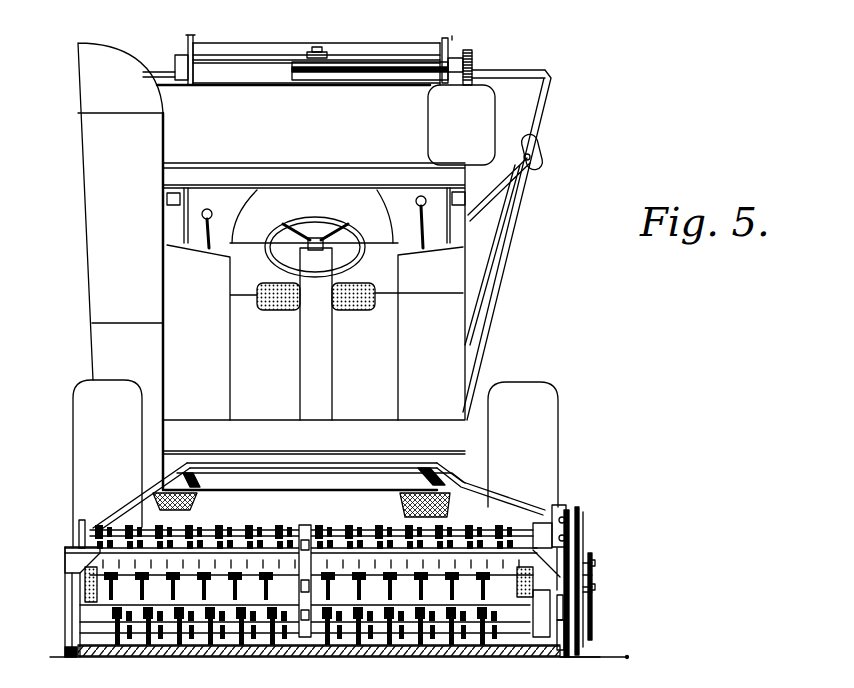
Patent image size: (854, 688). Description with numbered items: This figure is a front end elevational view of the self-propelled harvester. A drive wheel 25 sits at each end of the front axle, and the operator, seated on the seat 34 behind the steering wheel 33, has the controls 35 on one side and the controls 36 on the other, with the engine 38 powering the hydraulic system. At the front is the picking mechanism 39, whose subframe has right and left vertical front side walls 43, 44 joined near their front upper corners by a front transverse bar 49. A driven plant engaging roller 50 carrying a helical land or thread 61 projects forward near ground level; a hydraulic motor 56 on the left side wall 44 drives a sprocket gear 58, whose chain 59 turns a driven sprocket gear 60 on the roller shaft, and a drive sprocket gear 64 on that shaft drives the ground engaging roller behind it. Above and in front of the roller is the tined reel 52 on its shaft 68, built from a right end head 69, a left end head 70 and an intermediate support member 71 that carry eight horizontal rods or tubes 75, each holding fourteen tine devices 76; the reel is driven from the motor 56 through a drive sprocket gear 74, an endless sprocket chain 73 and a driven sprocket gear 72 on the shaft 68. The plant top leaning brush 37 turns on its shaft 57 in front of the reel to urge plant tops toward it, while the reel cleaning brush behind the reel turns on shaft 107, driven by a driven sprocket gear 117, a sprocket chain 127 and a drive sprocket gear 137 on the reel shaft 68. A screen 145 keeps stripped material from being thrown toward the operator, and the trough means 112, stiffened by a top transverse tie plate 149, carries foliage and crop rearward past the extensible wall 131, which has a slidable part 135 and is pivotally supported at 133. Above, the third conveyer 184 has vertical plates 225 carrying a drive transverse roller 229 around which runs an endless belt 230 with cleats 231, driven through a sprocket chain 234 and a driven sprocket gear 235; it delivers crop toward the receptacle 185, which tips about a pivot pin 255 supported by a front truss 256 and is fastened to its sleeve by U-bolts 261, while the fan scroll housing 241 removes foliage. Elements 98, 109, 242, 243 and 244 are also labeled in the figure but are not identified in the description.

The drive wheel 25 is at (73, 396).
The steering wheel 33 is at (300, 217).
The seat 34 is at (284, 313).
The controls 35 is at (421, 196).
The controls 36 is at (208, 208).
The plant top leaning means 37 is at (80, 597).
The engine 38 is at (128, 296).
The picking mechanism 39 is at (147, 518).
The right front side wall 43 is at (67, 638).
The left front side wall 44 is at (562, 640).
The front transverse bar 49 is at (98, 550).
The plant engaging roller 50 is at (528, 655).
The tined reel 52 is at (474, 522).
The hydraulic motor 56 is at (542, 523).
The brush shaft 57 is at (593, 587).
The sprocket gear 58 is at (567, 510).
The chain 59 is at (572, 624).
The driven sprocket gear 60 is at (575, 657).
The helical land or thread 61 is at (333, 655).
The drive sprocket gear 64 is at (566, 660).
The reel shaft 68 is at (592, 575).
The right end head 69 is at (78, 525).
The left end head 70 is at (560, 507).
The intermediate support member 71 is at (303, 525).
The driven sprocket gear 72 is at (586, 592).
The endless sprocket chain 73 is at (584, 527).
The drive sprocket gear 74 is at (577, 508).
The rods or tubes 75 is at (380, 530).
The tine devices 76 is at (262, 524).
The shaft 98 is at (590, 543).
The cleaning brush shaft 107 is at (592, 563).
The sickle guards 109 is at (155, 658).
The trough means 112 is at (152, 485).
The driven sprocket gear 117 is at (591, 553).
The sprocket chain 127 is at (595, 566).
The extensible and contractible wall 131 is at (205, 500).
The pivotal support 133 is at (207, 470).
The wall part 135 is at (178, 477).
The drive sprocket gear 137 is at (593, 590).
The screen 145 is at (260, 505).
The top transverse tie plate 149 is at (372, 467).
The third conveyer 184 is at (453, 37).
The receptacle 185 is at (540, 101).
The vertical plates 225 is at (185, 50).
The drive transverse roller 229 is at (190, 42).
The endless belt 230 is at (259, 50).
The cleats 231 is at (368, 42).
The sprocket chain 234 is at (472, 62).
The driven sprocket gear 235 is at (470, 50).
The scroll housing 241 is at (258, 113).
The fitting 242 is at (320, 48).
The steering wheel 243 is at (338, 211).
The hood edge 244 is at (166, 132).
The pivot pin 255 is at (540, 160).
The front truss 256 is at (497, 207).
The U-bolts 261 is at (540, 152).